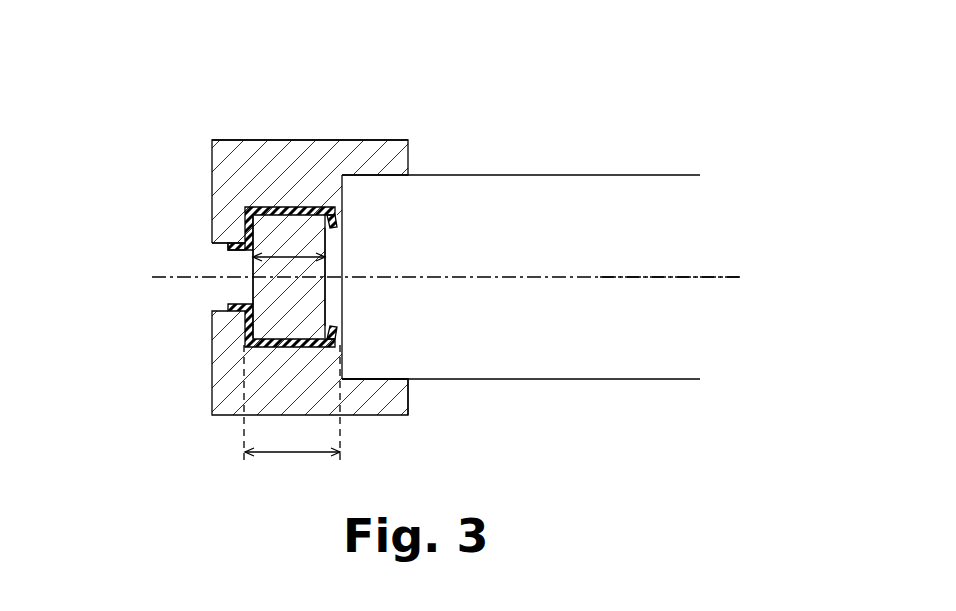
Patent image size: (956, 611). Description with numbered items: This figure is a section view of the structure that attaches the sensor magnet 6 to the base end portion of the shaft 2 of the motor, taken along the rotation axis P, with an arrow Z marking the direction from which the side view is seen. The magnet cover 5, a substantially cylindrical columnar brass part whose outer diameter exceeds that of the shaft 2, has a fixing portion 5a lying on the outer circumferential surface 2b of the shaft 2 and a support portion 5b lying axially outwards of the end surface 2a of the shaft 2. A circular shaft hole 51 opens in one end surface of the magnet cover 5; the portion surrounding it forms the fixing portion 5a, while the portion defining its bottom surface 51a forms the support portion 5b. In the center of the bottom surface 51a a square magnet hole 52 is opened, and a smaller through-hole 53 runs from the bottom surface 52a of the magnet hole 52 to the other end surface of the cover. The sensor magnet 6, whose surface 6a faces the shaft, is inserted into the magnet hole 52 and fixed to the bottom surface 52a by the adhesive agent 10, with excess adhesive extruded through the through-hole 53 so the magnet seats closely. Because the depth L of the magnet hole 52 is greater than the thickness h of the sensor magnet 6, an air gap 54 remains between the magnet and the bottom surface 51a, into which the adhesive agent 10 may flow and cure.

The magnet cover 5 is at (395, 44).
The fixing portion 5a is at (385, 122).
The support portion 5b is at (270, 122).
The adhesive agent 10 is at (253, 207).
The shaft 2 is at (596, 175).
The end surface 2a is at (340, 318).
The outer circumferential surface 2b is at (382, 202).
The shaft hole 51 is at (400, 378).
The bottom surface 51a is at (345, 357).
The magnet hole 52 is at (335, 218).
The bottom surface 52a is at (248, 342).
The through-hole 53 is at (222, 249).
The air gap 54 is at (333, 257).
The sensor magnet 6 is at (250, 288).
The shaft surface 6a is at (250, 263).
The arrow Z is at (140, 277).
The rotation axis P is at (735, 280).
The thickness h is at (289, 243).
The depth L is at (292, 402).